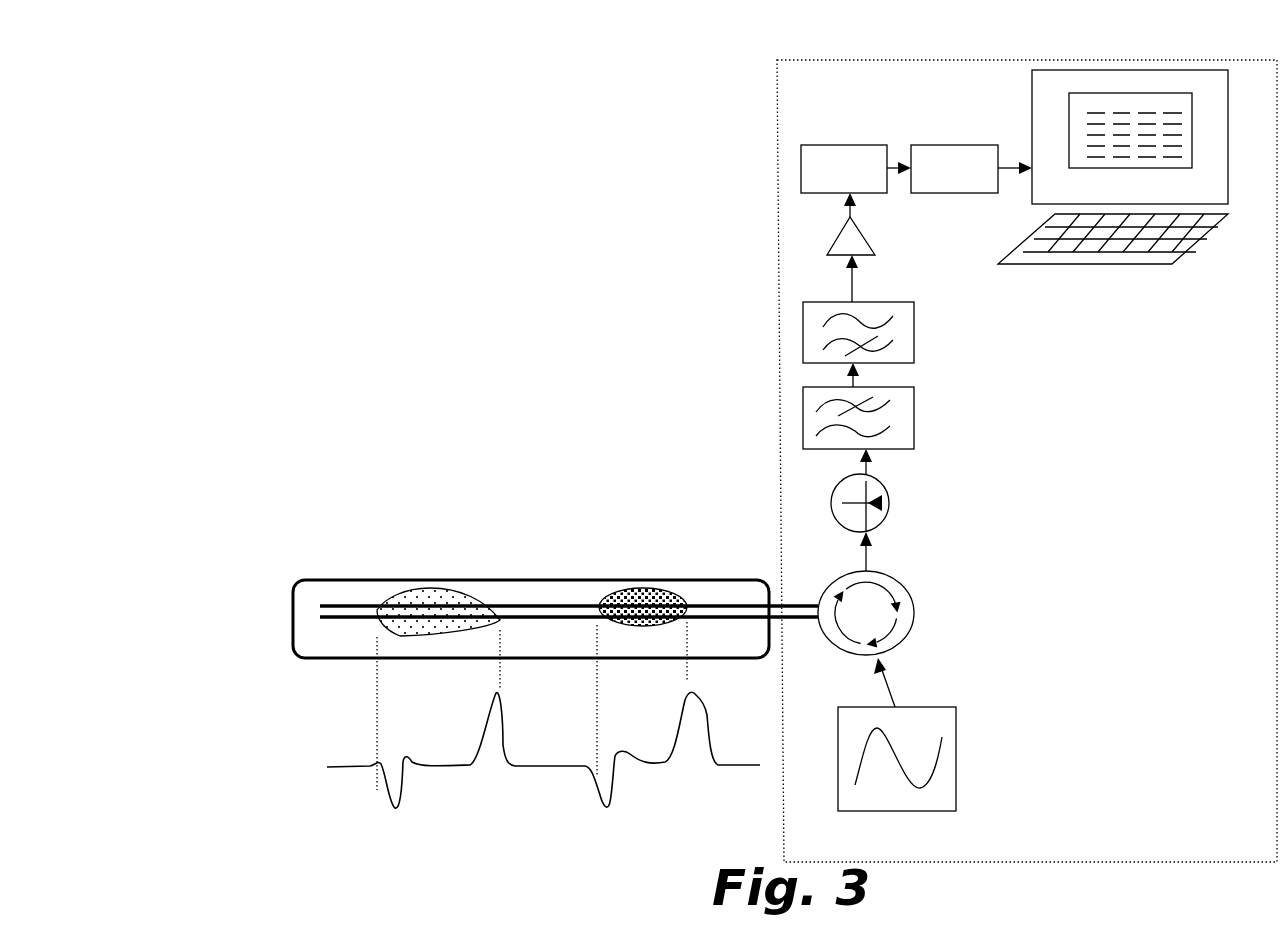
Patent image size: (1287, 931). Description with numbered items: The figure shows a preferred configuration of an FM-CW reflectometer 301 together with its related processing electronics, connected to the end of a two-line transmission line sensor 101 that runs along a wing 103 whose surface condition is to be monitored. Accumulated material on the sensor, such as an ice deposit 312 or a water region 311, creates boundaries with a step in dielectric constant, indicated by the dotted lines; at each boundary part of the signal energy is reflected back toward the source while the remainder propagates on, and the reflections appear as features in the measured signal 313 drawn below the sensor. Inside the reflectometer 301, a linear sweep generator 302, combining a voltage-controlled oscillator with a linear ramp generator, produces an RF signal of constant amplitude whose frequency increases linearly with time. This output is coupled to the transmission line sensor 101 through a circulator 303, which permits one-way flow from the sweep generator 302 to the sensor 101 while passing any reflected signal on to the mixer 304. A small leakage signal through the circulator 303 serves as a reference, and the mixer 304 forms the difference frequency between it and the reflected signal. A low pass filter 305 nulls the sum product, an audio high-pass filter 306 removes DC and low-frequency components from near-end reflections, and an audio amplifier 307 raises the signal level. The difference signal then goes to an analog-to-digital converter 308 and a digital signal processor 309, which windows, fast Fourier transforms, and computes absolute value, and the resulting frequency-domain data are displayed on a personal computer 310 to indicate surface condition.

The transmission line sensor 101 is at (790, 604).
The wing 103 is at (293, 597).
The FM-CW reflectometer 301 is at (768, 86).
The linear sweep generator 302 is at (956, 737).
The circulator 303 is at (915, 606).
The mixer 304 is at (888, 494).
The low pass filter 305 is at (914, 397).
The audio high-pass filter 306 is at (914, 337).
The audio amplifier 307 is at (862, 243).
The analog-to-digital converter 308 is at (862, 145).
The digital signal processor 309 is at (948, 145).
The personal computer 310 is at (1172, 264).
The boundary 311 is at (612, 597).
The first deposit 312 is at (415, 595).
The measured signal 313 is at (310, 768).